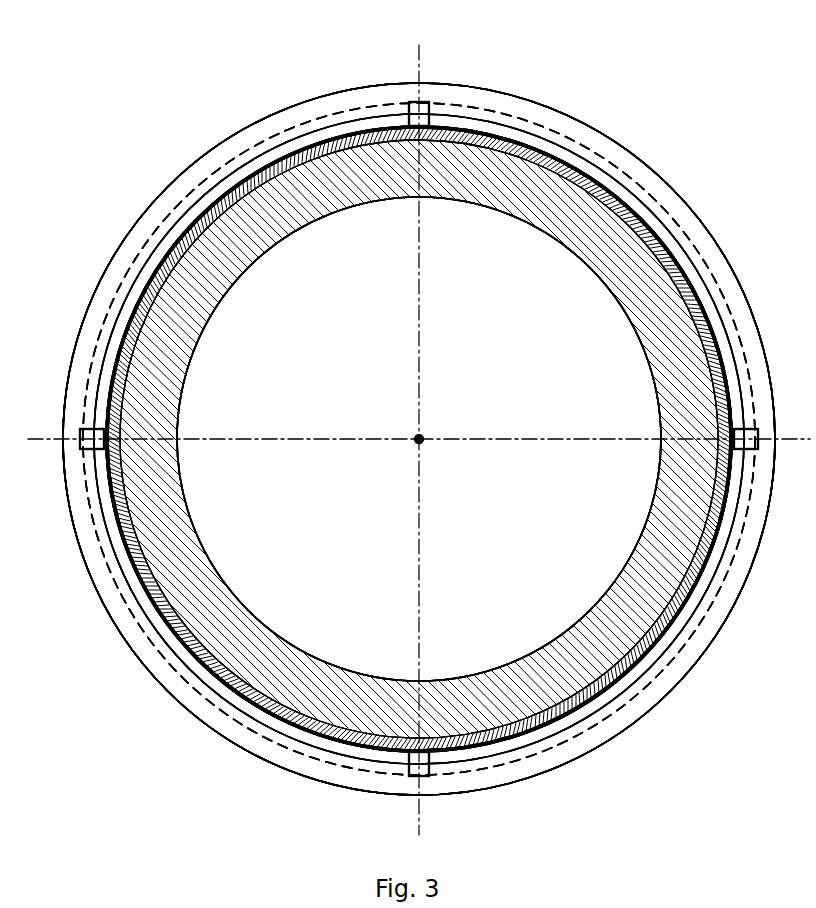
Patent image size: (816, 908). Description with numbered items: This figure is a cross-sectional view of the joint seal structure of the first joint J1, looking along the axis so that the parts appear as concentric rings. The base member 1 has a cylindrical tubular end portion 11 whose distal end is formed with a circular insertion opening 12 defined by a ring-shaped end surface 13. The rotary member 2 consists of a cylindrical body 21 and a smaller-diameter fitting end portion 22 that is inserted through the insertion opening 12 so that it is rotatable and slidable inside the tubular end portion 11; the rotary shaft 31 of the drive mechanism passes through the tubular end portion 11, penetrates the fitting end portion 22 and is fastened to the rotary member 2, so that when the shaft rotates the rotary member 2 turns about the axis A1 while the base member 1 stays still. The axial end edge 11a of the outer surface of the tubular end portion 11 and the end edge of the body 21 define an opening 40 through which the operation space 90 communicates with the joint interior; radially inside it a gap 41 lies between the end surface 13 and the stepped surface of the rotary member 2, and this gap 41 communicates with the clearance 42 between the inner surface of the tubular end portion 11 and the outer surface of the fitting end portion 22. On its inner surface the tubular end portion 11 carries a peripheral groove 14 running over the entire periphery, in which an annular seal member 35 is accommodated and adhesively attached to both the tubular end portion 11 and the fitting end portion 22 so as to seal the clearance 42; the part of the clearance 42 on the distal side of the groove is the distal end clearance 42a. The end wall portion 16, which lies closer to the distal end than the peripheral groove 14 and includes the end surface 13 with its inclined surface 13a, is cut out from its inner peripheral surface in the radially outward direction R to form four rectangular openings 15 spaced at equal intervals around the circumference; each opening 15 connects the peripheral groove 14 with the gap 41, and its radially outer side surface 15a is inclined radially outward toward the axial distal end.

The base member 1 is at (713, 222).
The tubular end portion 11 is at (682, 207).
The axial end edge of the outer peripheral surface of the tubular end portion 11a is at (166, 188).
The insertion opening 12 is at (227, 200).
The end surface 13 is at (267, 160).
The inclined surface 13a is at (298, 117).
The peripheral groove 14 is at (142, 235).
The opening 15 is at (433, 100).
The side surface 15a is at (409, 101).
The end wall portion 16 is at (137, 267).
The rotary member 2 is at (419, 398).
The body 21 is at (568, 193).
The fitting end portion 22 is at (552, 152).
The rotary shaft 31 is at (343, 363).
The seal member 35 is at (110, 398).
The opening 40 is at (185, 715).
The gap 41 is at (227, 719).
The clearance 42 is at (292, 728).
The distal end clearance 42a is at (419, 485).
The operation space 90 is at (652, 799).
The radial direction R is at (671, 705).
The central axis A1 is at (421, 437).
The first joint J1 is at (663, 159).